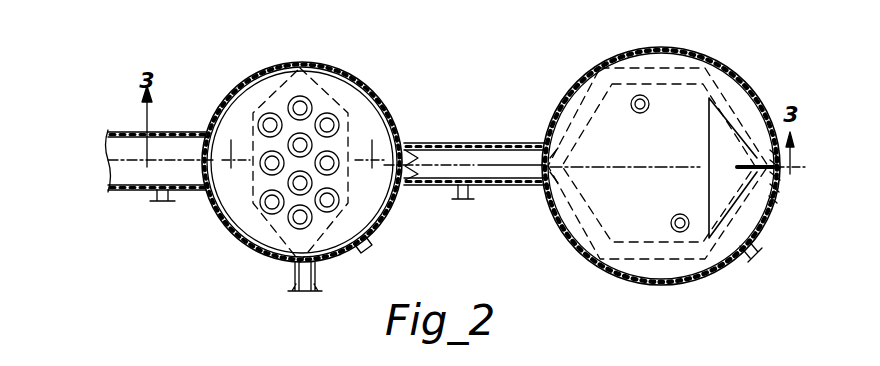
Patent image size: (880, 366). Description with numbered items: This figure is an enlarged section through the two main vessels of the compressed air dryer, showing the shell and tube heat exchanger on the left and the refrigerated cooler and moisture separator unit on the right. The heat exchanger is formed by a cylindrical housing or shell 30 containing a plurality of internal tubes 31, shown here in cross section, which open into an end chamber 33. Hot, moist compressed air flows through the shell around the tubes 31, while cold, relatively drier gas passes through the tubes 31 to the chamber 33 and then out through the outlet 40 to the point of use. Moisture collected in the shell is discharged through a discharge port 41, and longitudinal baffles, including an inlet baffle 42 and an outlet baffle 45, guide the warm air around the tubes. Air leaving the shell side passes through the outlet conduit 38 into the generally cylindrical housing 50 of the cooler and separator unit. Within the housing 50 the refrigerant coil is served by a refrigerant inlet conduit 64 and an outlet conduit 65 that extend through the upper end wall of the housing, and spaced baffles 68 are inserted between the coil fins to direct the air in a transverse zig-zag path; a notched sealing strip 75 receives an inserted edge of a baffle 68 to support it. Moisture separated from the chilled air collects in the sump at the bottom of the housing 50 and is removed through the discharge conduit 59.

The cylindrical housing or shell 30 is at (378, 96).
The internal tubes 31 is at (327, 116).
The end chamber 33 is at (372, 200).
The outlet conduit 38 is at (470, 143).
The outlet 40 is at (200, 97).
The discharge port 41 is at (372, 250).
The inlet baffle 42 is at (250, 210).
The outlet baffle 45 is at (343, 238).
The cylindrical housing 50 is at (724, 72).
The discharge conduit 59 is at (758, 256).
The refrigerant inlet conduit 64 is at (646, 110).
The refrigerant outlet conduit 65 is at (670, 222).
The baffles 68 is at (716, 131).
The notched sealing strip 75 is at (770, 207).